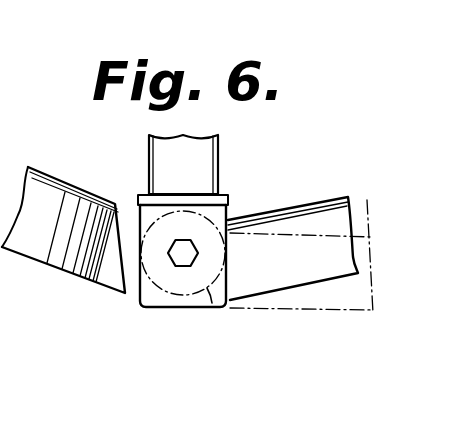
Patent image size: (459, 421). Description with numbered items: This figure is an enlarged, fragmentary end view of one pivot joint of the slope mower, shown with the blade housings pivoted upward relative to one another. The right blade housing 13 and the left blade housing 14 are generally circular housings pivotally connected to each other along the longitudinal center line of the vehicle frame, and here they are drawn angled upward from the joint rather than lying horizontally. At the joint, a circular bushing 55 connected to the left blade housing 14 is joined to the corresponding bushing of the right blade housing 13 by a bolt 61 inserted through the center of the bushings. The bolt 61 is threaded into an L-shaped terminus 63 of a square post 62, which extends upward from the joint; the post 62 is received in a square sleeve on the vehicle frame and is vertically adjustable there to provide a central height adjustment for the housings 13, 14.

The right blade housing 13 is at (320, 206).
The left blade housing 14 is at (61, 190).
The circular bushing 55 is at (212, 307).
The bolt 61 is at (185, 268).
The square post 62 is at (218, 158).
The L-shaped terminus 63 is at (229, 200).